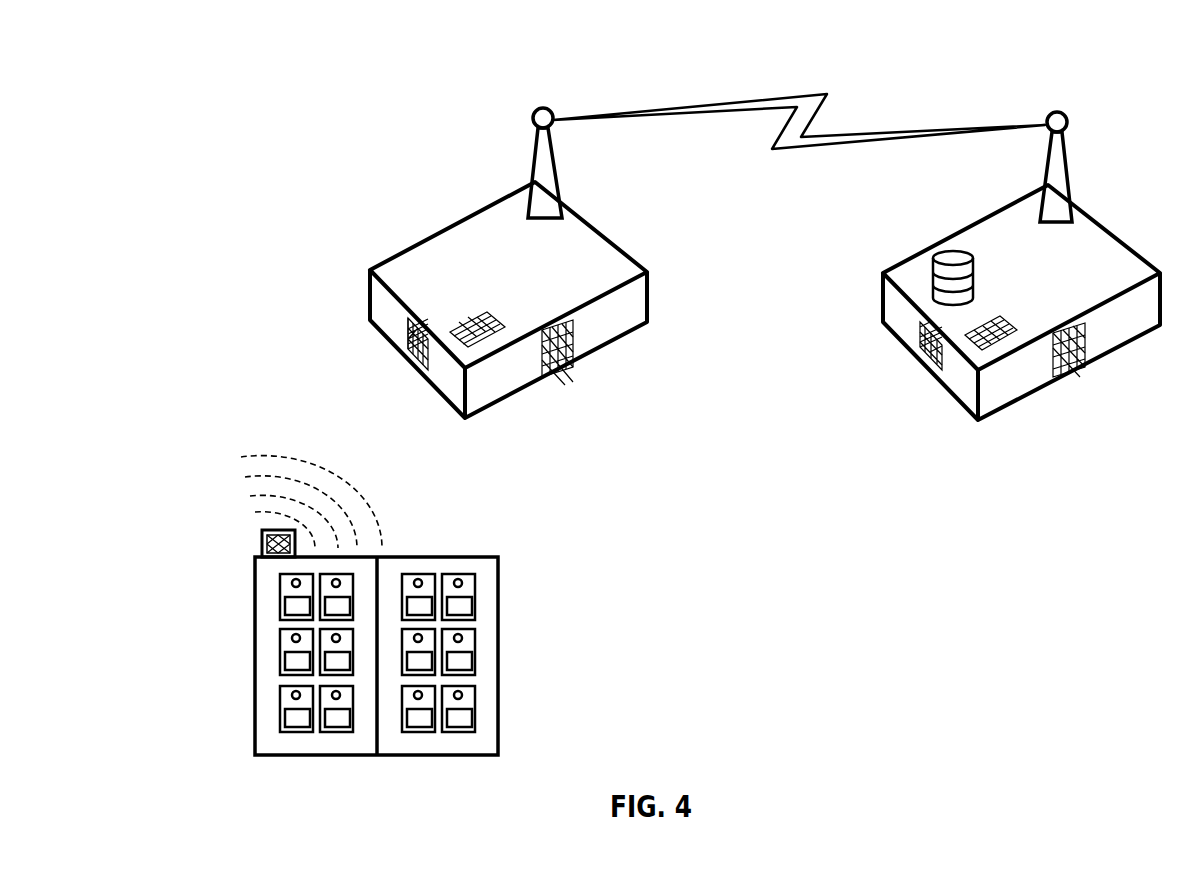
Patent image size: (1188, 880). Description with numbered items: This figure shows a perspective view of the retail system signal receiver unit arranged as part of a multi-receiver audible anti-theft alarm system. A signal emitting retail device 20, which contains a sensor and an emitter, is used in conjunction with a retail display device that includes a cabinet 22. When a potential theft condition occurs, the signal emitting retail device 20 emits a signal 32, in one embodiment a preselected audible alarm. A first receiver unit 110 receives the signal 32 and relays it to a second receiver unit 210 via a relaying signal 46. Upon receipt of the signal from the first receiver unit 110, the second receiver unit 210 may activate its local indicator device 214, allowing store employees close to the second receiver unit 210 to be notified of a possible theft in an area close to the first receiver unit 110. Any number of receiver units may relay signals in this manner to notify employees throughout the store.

The first receiver unit 110 is at (396, 206).
The second receiver unit 210 is at (909, 237).
The local indicator device 214 is at (948, 257).
The relaying signal 46 is at (800, 100).
The signal 32 is at (241, 458).
The signal emitting retail device 20 is at (262, 537).
The cabinet 22 is at (430, 557).